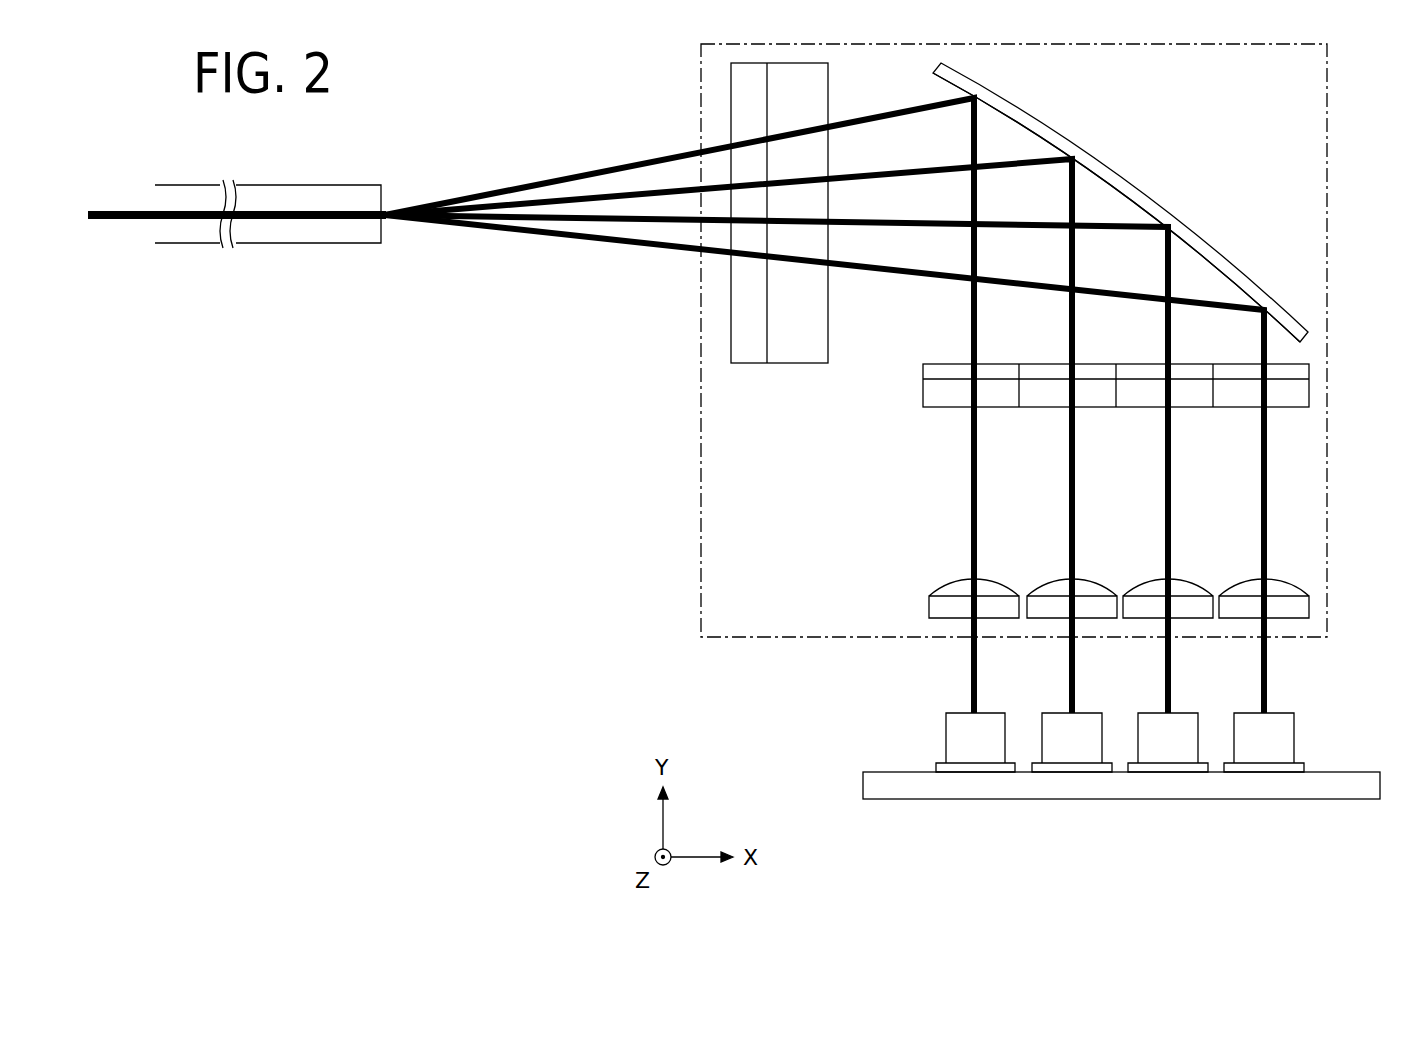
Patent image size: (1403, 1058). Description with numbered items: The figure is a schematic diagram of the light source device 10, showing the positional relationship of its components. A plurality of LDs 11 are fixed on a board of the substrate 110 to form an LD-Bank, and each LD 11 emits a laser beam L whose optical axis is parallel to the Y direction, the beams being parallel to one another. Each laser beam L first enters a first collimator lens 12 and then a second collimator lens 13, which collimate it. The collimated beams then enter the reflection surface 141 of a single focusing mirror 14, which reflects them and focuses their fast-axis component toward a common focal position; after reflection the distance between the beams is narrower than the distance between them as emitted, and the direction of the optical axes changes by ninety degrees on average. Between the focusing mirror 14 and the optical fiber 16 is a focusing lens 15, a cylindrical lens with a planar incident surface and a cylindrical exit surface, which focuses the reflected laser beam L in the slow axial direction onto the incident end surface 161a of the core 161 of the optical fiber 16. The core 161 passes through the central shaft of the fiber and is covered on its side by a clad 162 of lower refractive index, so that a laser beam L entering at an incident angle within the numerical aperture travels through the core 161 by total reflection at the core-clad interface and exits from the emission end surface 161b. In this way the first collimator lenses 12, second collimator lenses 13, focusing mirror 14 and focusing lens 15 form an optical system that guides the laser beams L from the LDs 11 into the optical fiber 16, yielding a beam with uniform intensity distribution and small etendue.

The light source device 10 is at (1327, 210).
The LD 11 is at (1263, 748).
The substrate 110 is at (1263, 799).
The first collimator lens 12 is at (1040, 582).
The second collimator lens 13 is at (1050, 408).
The focusing mirror 14 is at (1105, 158).
The reflection surface 141 is at (937, 77).
The focusing lens 15 is at (732, 83).
The optical fiber 16 is at (340, 185).
The core 161 is at (333, 220).
The incident end surface 161a is at (387, 223).
The emission end surface 161b is at (155, 220).
The clad 162 is at (275, 235).
The laser beam L is at (117, 210).